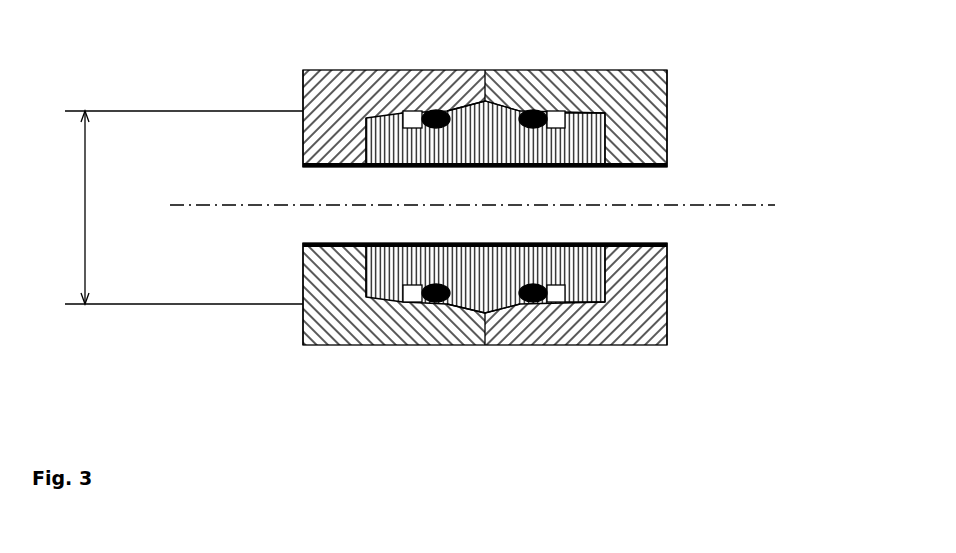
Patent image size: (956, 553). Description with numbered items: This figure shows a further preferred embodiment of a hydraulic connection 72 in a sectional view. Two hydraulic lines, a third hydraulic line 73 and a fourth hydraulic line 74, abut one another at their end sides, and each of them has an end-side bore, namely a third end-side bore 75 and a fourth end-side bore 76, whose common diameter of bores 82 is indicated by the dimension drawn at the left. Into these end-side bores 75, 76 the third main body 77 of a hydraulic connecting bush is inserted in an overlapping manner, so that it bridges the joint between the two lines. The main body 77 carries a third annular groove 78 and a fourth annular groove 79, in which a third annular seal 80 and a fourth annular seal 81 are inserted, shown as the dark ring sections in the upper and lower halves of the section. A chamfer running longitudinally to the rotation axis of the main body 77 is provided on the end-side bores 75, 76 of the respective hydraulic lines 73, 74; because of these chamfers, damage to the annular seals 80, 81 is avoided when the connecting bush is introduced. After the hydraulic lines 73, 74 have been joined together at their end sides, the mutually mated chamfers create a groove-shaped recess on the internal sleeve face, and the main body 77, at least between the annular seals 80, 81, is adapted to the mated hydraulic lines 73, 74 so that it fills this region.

The hydraulic connection 72 is at (365, 352).
The third hydraulic line 73 is at (327, 265).
The fourth hydraulic line 74 is at (660, 133).
The third end-side bore 75 is at (362, 130).
The fourth end-side bore 76 is at (610, 125).
The third main body 77 is at (403, 250).
The third annular groove of the third main body 78 is at (445, 270).
The fourth annular groove of the third main body 79 is at (538, 130).
The third annular seal of the third main body 80 is at (437, 112).
The fourth annular seal of the third main body 81 is at (540, 110).
The diameter of bores 82 is at (175, 207).